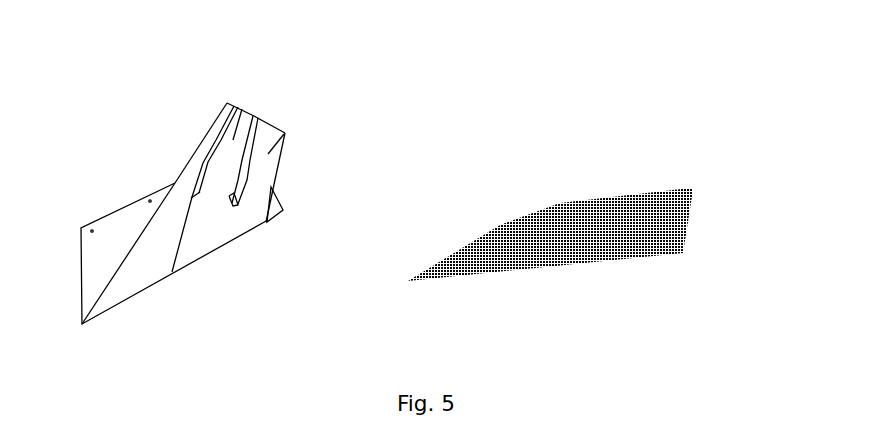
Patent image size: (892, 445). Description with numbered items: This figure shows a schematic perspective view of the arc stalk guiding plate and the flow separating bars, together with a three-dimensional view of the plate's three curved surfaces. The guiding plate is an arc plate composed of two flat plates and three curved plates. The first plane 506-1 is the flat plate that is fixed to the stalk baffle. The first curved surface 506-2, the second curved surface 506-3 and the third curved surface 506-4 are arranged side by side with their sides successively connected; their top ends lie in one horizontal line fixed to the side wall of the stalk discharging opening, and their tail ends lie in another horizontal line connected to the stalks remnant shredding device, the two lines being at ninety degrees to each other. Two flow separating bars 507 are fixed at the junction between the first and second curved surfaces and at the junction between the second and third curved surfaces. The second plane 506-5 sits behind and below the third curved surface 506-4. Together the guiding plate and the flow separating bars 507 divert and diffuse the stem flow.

The first plane 506-1 is at (110, 225).
The first curved surface 506-2 is at (229, 101).
The second curved surface 506-3 is at (256, 114).
The third curved surface 506-4 is at (287, 131).
The second plane 506-5 is at (277, 213).
The flow separating bar 507 is at (200, 192).